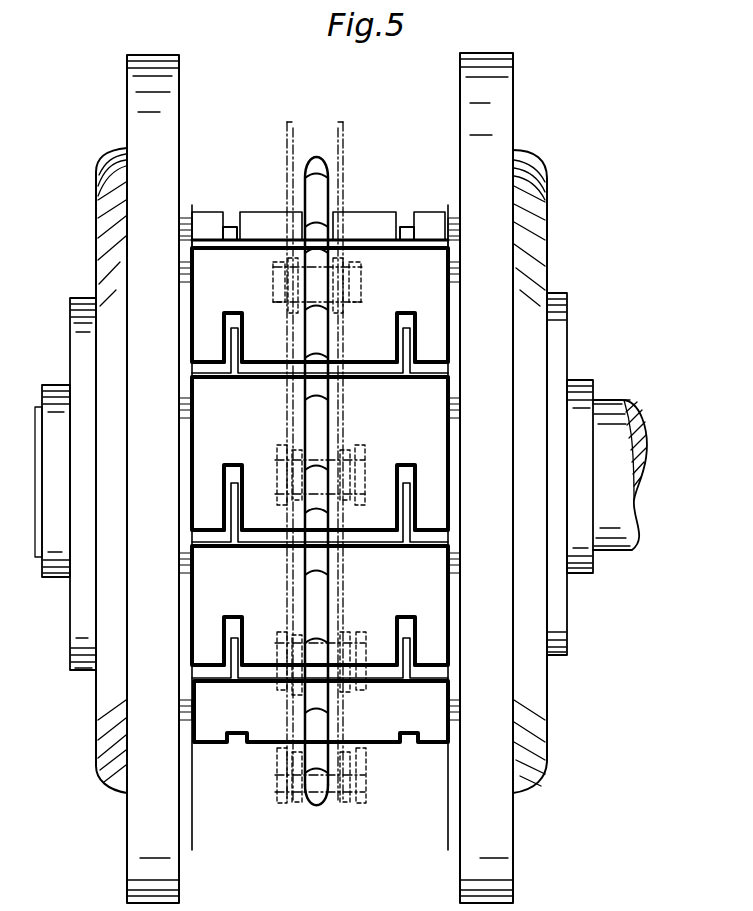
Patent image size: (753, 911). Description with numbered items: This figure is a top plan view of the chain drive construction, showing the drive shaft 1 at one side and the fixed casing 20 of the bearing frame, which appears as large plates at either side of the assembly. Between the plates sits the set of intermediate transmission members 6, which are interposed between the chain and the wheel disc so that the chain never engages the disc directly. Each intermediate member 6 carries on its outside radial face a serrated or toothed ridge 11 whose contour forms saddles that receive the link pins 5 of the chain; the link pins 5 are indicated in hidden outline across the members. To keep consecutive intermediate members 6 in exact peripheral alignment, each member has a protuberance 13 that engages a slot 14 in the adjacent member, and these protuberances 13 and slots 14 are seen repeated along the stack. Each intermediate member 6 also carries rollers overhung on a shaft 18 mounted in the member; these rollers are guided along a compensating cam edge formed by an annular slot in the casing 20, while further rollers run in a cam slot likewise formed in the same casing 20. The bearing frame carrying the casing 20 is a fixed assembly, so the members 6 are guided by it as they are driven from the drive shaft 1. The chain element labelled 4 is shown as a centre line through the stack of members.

The drive shaft 1 is at (609, 406).
The central rod / spindle 4 is at (338, 120).
The link pins 5 is at (333, 475).
The intermediate transmission member 6 is at (438, 440).
The serrated or toothed ridge 11 is at (327, 778).
The protuberance 13 is at (405, 347).
The slot 14 is at (412, 322).
The shaft 18 is at (180, 413).
The casing 20 is at (492, 104).